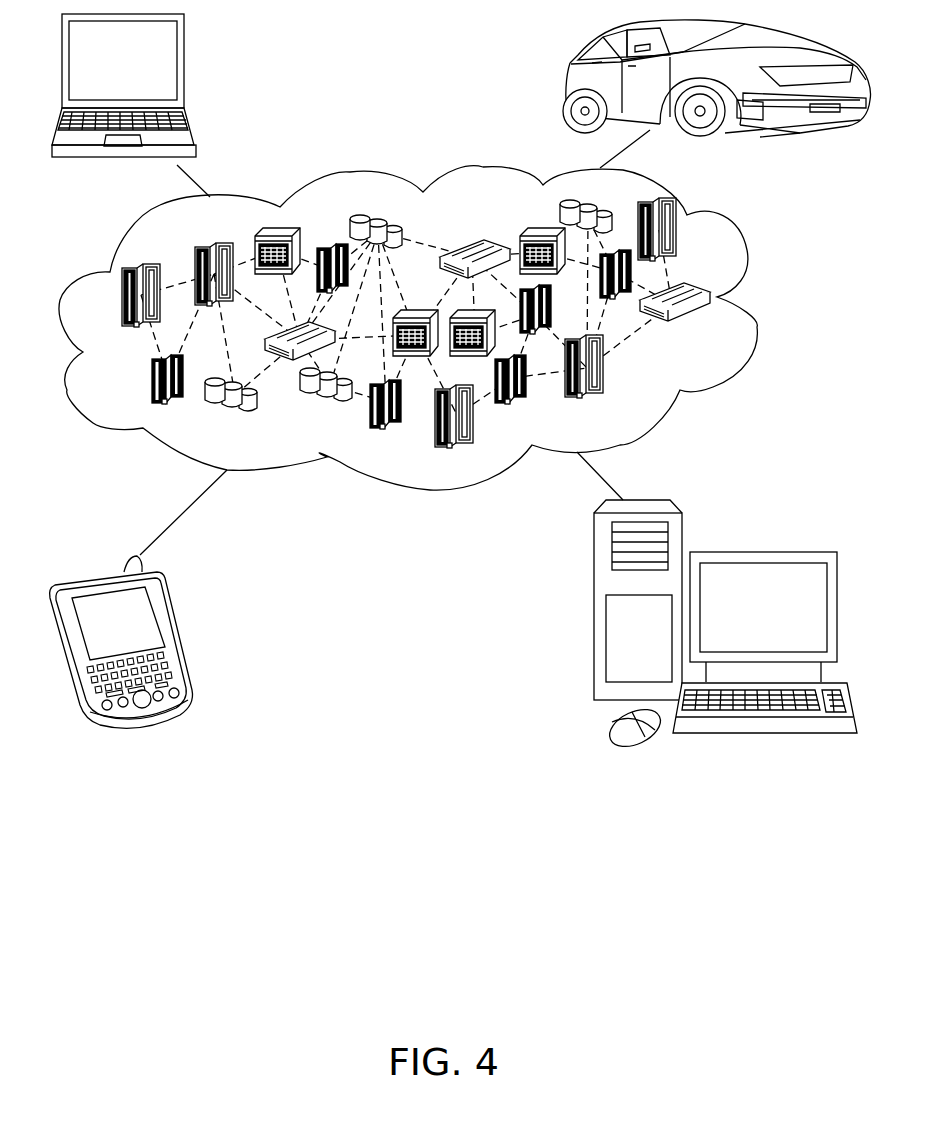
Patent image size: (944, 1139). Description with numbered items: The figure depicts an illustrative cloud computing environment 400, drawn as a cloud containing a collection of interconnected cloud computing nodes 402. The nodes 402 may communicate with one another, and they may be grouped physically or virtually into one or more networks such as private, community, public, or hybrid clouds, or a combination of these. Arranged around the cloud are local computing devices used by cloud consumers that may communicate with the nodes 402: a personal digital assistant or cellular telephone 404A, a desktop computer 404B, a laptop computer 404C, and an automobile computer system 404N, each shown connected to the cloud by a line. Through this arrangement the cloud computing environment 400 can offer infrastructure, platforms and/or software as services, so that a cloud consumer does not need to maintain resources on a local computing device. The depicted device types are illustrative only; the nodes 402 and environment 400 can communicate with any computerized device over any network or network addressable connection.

The cloud computing environment 400 is at (718, 298).
The cloud computing nodes 402 is at (706, 326).
The personal digital assistant (PDA) or cellular telephone 404A is at (165, 605).
The desktop computer 404B is at (751, 552).
The laptop computer 404C is at (184, 45).
The automobile computer system 404N is at (568, 80).